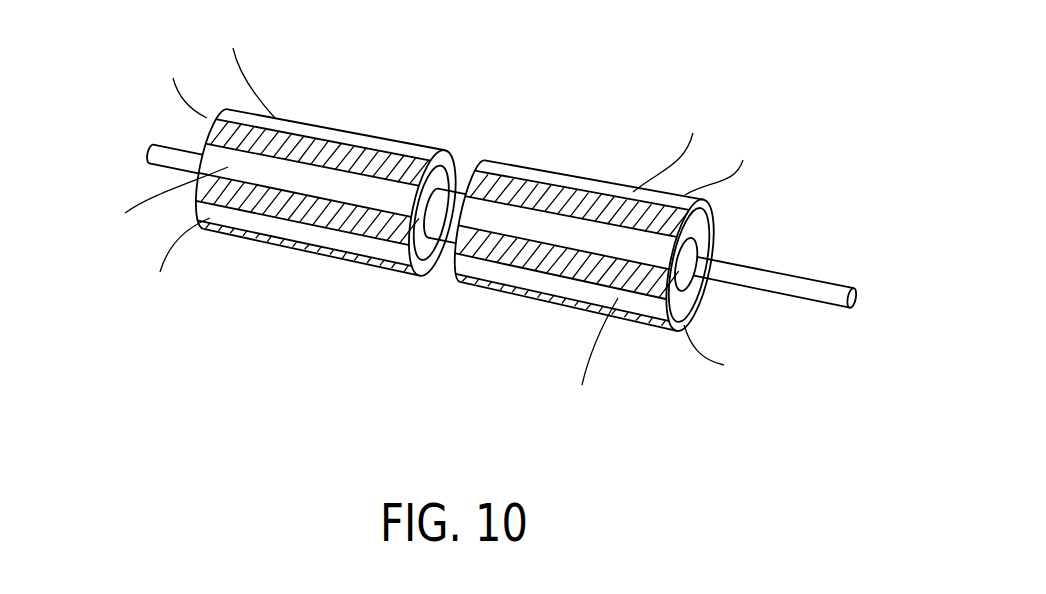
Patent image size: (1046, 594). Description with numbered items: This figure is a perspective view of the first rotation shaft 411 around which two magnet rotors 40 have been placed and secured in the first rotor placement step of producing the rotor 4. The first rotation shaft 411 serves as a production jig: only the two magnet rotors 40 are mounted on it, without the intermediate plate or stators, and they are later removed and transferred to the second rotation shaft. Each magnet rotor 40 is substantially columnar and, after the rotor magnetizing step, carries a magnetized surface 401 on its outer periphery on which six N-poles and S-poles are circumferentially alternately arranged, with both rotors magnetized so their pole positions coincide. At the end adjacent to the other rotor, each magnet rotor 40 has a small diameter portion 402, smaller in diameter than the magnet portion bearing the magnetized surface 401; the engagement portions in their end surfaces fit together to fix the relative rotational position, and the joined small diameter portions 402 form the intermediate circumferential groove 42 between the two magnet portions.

The rotor 4 is at (713, 78).
The magnet rotor 40 is at (432, 218).
The magnetized surface 401 is at (333, 122).
The small diameter portion 402 is at (425, 218).
The intermediate circumferential groove 42 is at (470, 180).
The first rotation shaft 411 is at (793, 283).